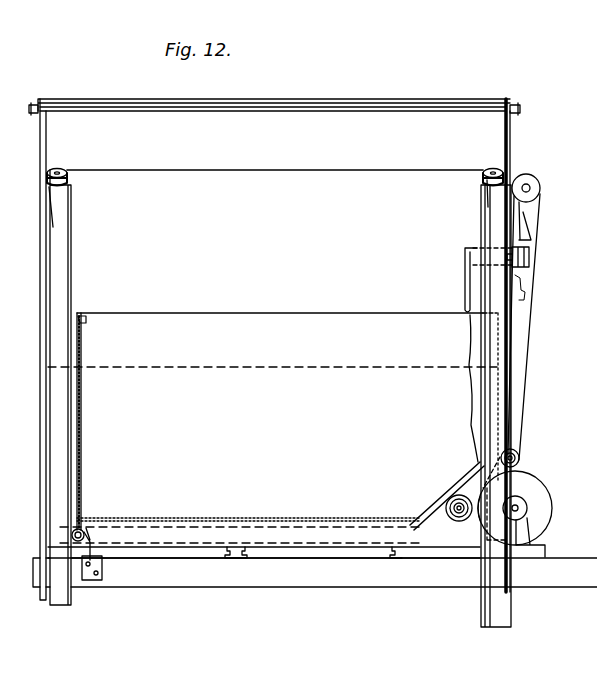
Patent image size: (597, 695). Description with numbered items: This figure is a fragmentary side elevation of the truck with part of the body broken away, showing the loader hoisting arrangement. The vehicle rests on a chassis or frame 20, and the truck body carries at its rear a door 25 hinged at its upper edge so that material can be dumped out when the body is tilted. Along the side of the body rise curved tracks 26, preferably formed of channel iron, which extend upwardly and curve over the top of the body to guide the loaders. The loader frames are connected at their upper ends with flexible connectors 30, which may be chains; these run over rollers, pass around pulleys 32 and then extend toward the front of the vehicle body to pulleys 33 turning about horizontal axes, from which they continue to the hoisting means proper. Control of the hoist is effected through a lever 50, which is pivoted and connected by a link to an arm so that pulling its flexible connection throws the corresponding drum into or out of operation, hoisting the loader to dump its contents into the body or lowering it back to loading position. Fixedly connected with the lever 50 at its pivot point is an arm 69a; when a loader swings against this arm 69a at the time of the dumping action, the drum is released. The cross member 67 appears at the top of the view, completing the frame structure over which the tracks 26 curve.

The top cross bar 67 is at (392, 99).
The pulleys 32 is at (60, 172).
The pulleys 33 is at (522, 178).
The flexible connectors 30 is at (282, 172).
The curved tracks 26 is at (57, 272).
The lever 50 is at (531, 252).
The arms 69a is at (462, 298).
The door 25 is at (80, 392).
The chassis or frame 20 is at (342, 578).